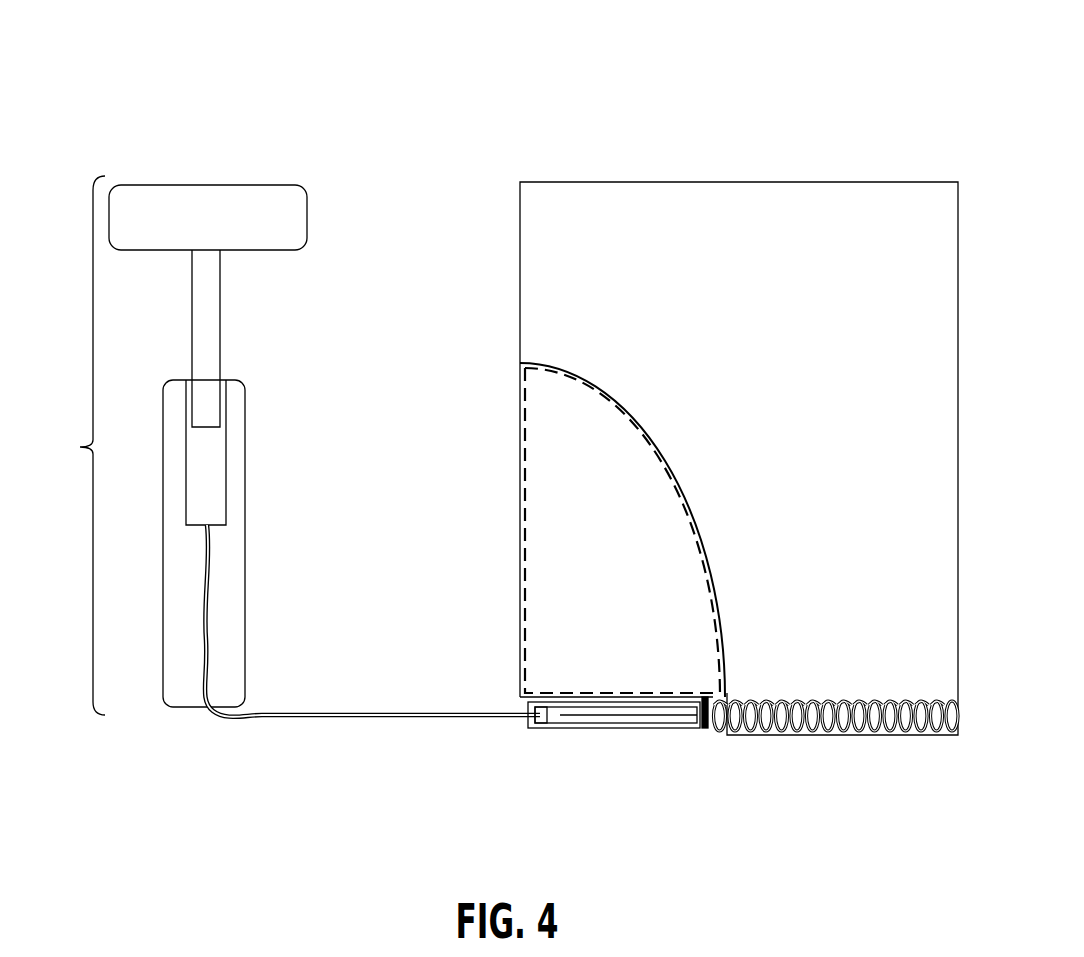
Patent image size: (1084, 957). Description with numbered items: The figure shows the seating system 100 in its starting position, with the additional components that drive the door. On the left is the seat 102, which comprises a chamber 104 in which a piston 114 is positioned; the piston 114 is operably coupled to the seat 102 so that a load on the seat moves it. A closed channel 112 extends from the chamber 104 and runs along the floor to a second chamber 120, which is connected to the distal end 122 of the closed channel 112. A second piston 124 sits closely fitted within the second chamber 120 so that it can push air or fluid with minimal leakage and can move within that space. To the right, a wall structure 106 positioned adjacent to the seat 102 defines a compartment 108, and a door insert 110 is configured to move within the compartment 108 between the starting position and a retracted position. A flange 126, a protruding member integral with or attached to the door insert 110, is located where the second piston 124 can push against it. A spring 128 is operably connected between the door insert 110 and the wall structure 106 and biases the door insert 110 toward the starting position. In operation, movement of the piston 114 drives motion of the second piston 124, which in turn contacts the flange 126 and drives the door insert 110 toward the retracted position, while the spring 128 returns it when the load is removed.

The seating system 100 is at (872, 80).
The seat 102 is at (74, 445).
The chamber 104 is at (205, 508).
The wall structure 106 is at (538, 273).
The compartment 108 is at (632, 571).
The door insert 110 is at (522, 481).
The closed channel 112 is at (263, 719).
The piston 114 is at (206, 315).
The second chamber 120 is at (537, 708).
The distal end 122 is at (517, 697).
The second piston 124 is at (605, 718).
The flange 126 is at (705, 729).
The spring 128 is at (832, 736).